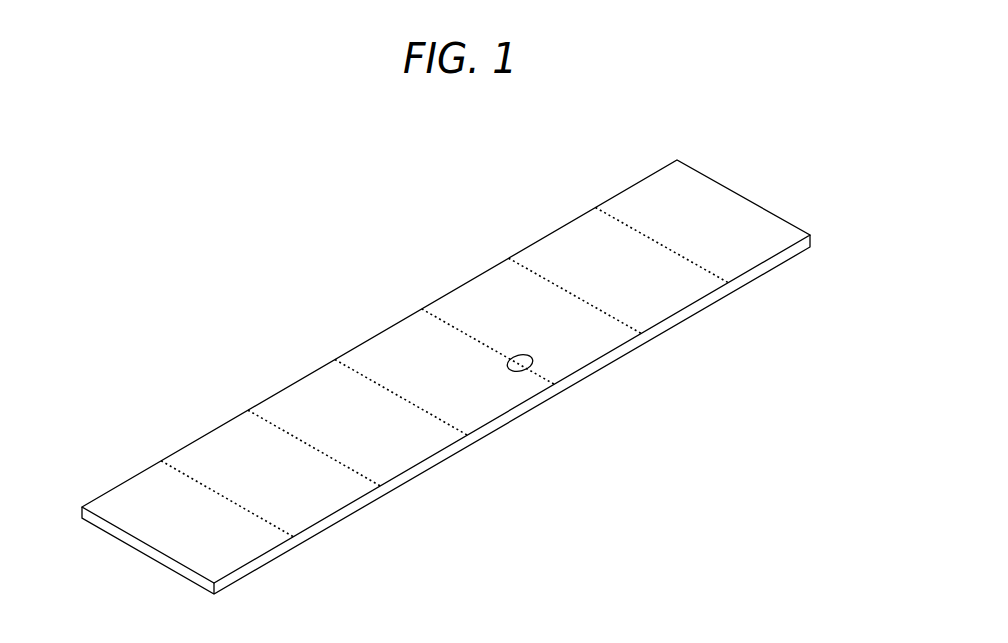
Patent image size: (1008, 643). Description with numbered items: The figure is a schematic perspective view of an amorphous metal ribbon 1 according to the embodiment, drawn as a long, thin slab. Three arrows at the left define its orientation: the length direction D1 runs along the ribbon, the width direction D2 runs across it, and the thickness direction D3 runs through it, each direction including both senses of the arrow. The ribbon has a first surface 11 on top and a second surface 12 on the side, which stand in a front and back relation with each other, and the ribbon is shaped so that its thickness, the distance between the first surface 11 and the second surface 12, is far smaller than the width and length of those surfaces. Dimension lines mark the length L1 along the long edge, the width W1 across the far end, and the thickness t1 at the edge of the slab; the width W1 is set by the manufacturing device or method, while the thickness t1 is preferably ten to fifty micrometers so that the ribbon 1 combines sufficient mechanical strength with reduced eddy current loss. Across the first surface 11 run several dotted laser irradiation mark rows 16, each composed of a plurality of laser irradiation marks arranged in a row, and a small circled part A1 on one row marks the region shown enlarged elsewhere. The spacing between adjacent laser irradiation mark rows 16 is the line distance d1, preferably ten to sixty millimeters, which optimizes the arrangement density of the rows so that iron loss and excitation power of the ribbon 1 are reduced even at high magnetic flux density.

The amorphous metal ribbon 1 is at (489, 341).
The first surface 11 is at (743, 250).
The second surface 12 is at (697, 315).
The laser irradiation mark rows 16 is at (280, 517).
The region A1 is at (533, 362).
The length L1 is at (677, 160).
The width W1 is at (677, 160).
The thickness t1 is at (810, 235).
The line distance d1 is at (416, 303).
The length direction D1 is at (58, 297).
The width direction D2 is at (58, 297).
The thickness direction D3 is at (58, 297).